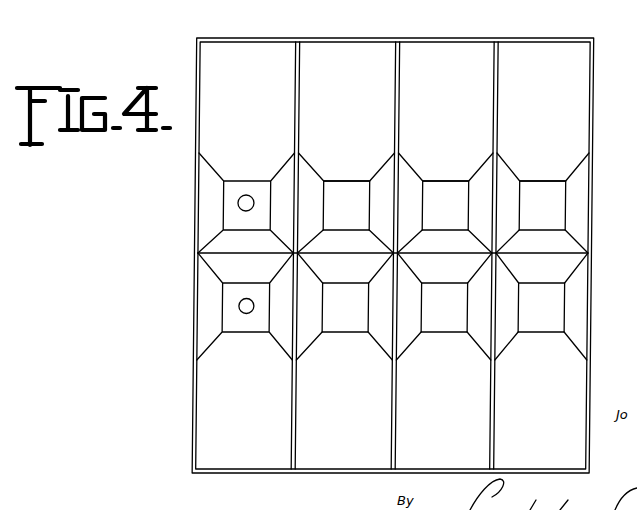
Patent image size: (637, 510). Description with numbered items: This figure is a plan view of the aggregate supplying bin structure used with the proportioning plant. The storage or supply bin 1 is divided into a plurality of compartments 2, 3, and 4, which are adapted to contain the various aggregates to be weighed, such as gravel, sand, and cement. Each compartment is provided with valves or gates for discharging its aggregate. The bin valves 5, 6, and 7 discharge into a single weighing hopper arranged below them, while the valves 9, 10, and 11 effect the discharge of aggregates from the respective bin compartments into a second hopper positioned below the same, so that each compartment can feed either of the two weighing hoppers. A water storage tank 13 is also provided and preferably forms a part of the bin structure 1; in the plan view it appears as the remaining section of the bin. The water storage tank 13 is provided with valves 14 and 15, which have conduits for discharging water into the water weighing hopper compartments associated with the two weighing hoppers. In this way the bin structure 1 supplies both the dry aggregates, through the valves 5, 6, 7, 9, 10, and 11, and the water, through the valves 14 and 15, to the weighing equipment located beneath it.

The storage or supply bin 1 is at (592, 100).
The compartment 2 is at (540, 51).
The compartment 3 is at (452, 48).
The compartment 4 is at (356, 48).
The bin valve 5 is at (547, 325).
The bin valve 6 is at (447, 325).
The bin valve 7 is at (348, 328).
The valve 9 is at (540, 196).
The valve 10 is at (440, 196).
The valve 11 is at (343, 196).
The water storage tank 13 is at (208, 330).
The valve 14 is at (249, 314).
The valve 15 is at (250, 193).